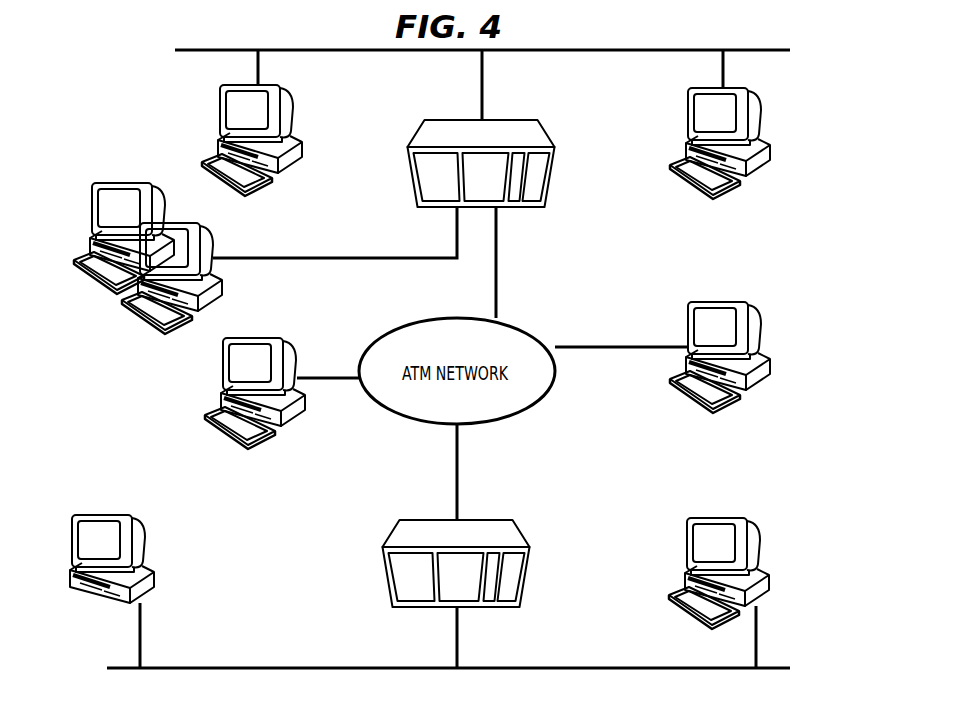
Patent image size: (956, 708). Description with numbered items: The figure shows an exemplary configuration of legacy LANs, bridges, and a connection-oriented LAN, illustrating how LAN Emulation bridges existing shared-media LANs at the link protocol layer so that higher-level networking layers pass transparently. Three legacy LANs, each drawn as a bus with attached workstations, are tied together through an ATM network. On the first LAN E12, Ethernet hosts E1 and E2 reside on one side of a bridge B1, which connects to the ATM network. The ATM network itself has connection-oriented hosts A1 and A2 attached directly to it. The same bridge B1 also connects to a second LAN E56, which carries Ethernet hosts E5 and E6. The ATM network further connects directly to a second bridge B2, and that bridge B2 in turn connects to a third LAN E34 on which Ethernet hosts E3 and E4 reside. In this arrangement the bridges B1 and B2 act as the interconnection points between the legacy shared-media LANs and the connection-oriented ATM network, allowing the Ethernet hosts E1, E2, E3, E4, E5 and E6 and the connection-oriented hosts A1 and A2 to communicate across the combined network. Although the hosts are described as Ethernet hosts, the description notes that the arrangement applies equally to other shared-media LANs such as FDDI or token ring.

The Ethernet host E1 is at (221, 103).
The Ethernet host E2 is at (763, 160).
The Ethernet host E3 is at (146, 585).
The Ethernet host E4 is at (763, 589).
The Ethernet host E5 is at (90, 282).
The Ethernet host E6 is at (146, 330).
The connection-oriented host A1 is at (290, 417).
The connection-oriented host A2 is at (763, 378).
The bridge B1 is at (550, 185).
The bridge B2 is at (520, 575).
The legacy LAN E12 is at (482, 69).
The legacy LAN E56 is at (335, 251).
The legacy LAN E34 is at (448, 651).